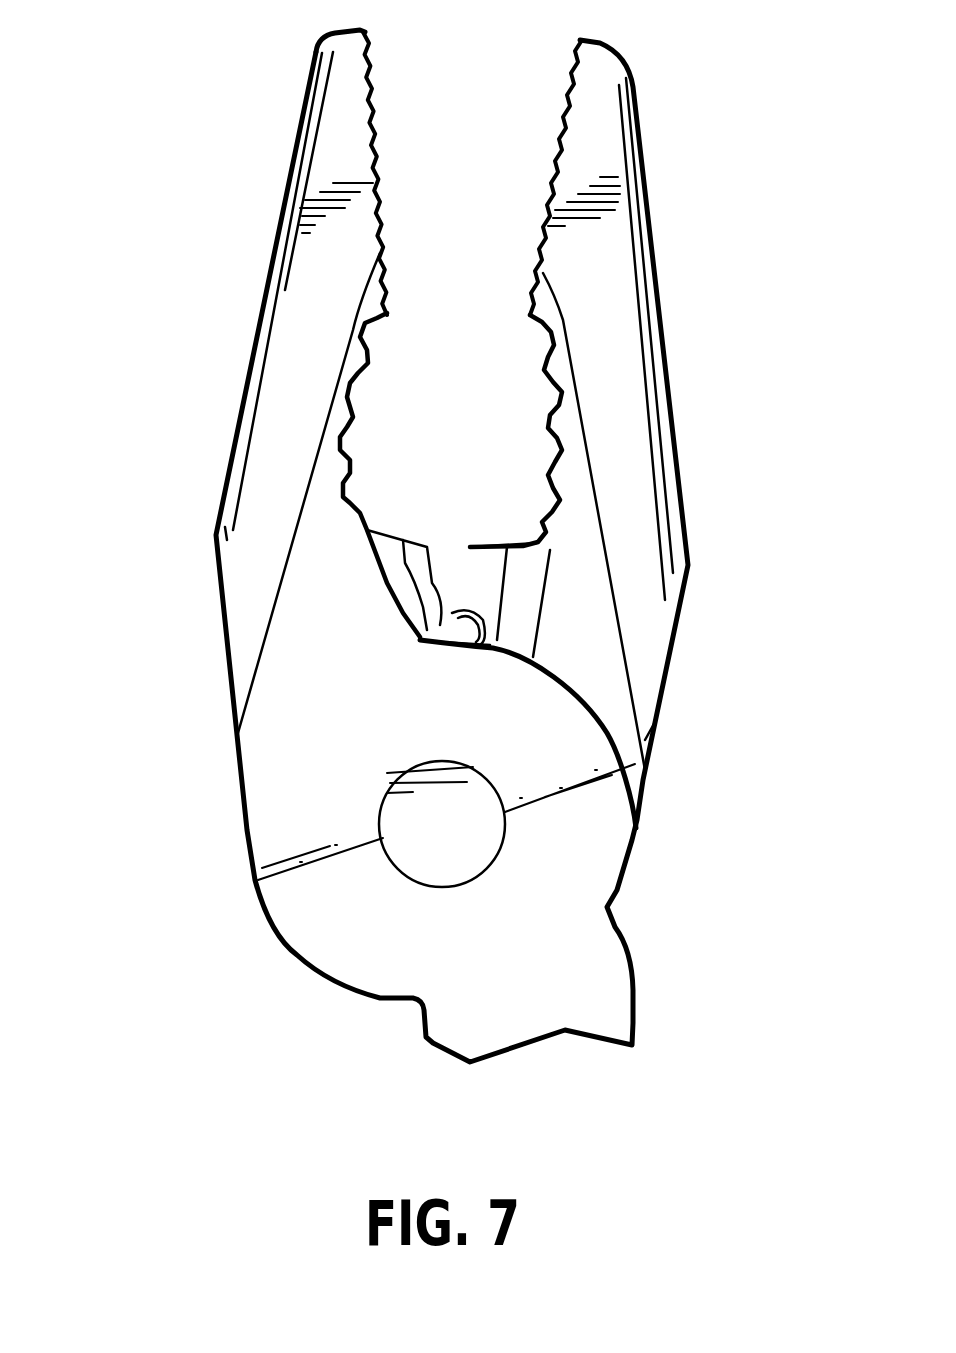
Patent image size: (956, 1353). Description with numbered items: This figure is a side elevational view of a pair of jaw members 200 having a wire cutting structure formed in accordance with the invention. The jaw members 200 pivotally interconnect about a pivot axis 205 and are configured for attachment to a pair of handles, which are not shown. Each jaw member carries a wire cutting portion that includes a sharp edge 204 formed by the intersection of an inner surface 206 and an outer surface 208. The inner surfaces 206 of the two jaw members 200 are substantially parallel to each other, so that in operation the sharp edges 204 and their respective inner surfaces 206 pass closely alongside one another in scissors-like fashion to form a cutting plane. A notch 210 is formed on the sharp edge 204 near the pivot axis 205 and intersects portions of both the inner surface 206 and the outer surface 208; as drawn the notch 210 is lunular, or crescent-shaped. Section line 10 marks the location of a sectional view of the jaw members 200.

The jaw member 200 is at (335, 165).
The sharp edge 204 is at (467, 567).
The pivot axis 205 is at (437, 827).
The inner surface 206 is at (493, 580).
The outer surface 208 is at (415, 563).
The notch 210 is at (425, 641).
The section line 10 is at (210, 642).